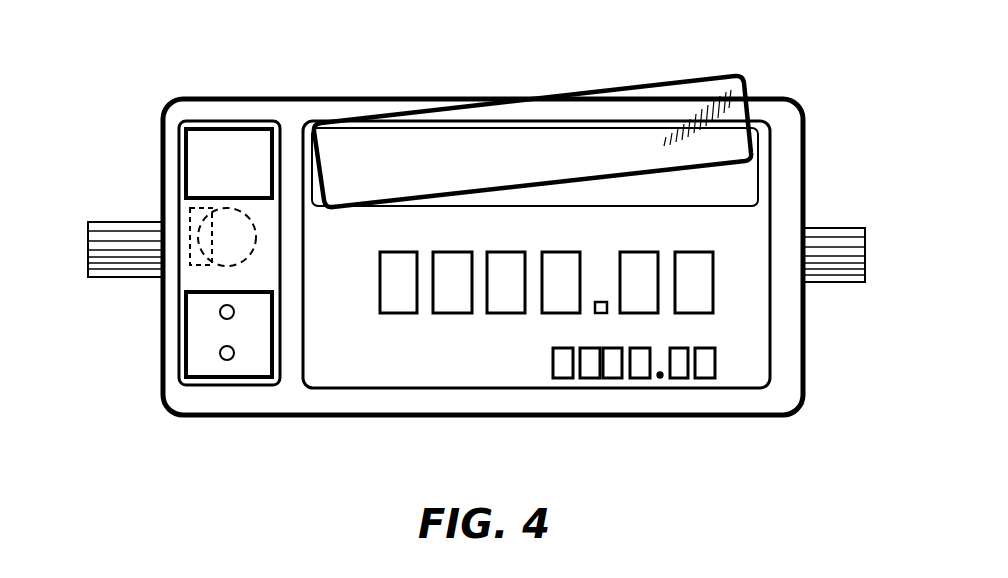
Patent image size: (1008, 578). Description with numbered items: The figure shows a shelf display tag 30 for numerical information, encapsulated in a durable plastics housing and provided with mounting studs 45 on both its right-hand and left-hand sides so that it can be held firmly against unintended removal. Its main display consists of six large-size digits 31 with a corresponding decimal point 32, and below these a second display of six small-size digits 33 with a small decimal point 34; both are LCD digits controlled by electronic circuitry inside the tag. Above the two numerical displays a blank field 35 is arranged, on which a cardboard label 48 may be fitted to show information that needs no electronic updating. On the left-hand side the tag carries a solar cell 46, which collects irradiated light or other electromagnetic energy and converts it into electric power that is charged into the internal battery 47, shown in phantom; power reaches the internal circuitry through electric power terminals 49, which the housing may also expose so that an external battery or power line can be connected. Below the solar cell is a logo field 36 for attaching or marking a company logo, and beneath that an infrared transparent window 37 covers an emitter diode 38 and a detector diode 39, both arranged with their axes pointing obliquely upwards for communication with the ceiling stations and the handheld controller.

The shelf display tag 30 is at (377, 60).
The large-size digits 31 is at (397, 252).
The decimal point 32 is at (598, 317).
The small-size digits 33 is at (640, 378).
The small decimal point 34 is at (660, 380).
The blank field 35 is at (743, 185).
The logo field 36 is at (180, 272).
The infrared transparent window 37 is at (212, 365).
The emitter diode 38 is at (218, 352).
The detector diode 39 is at (218, 310).
The mounting studs 45 is at (88, 248).
The solar cell 46 is at (215, 172).
The internal battery 47 is at (188, 208).
The cardboard label 48 is at (648, 97).
The electric power terminals 49 is at (177, 273).